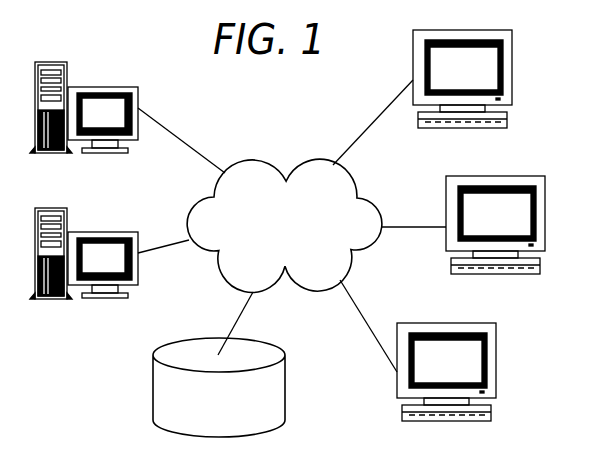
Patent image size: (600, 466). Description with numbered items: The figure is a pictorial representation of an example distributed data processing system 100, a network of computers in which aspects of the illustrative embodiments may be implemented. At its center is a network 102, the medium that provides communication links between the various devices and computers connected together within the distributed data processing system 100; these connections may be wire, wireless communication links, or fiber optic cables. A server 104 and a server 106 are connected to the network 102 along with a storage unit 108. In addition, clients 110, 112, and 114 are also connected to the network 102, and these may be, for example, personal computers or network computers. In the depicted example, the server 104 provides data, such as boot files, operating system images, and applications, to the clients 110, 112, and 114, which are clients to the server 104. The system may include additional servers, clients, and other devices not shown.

The distributed data processing system 100 is at (114, 361).
The network 102 is at (255, 160).
The server 104 is at (103, 87).
The server 106 is at (103, 232).
The storage unit 108 is at (285, 378).
The client 110 is at (512, 72).
The client 112 is at (543, 219).
The client 114 is at (494, 365).